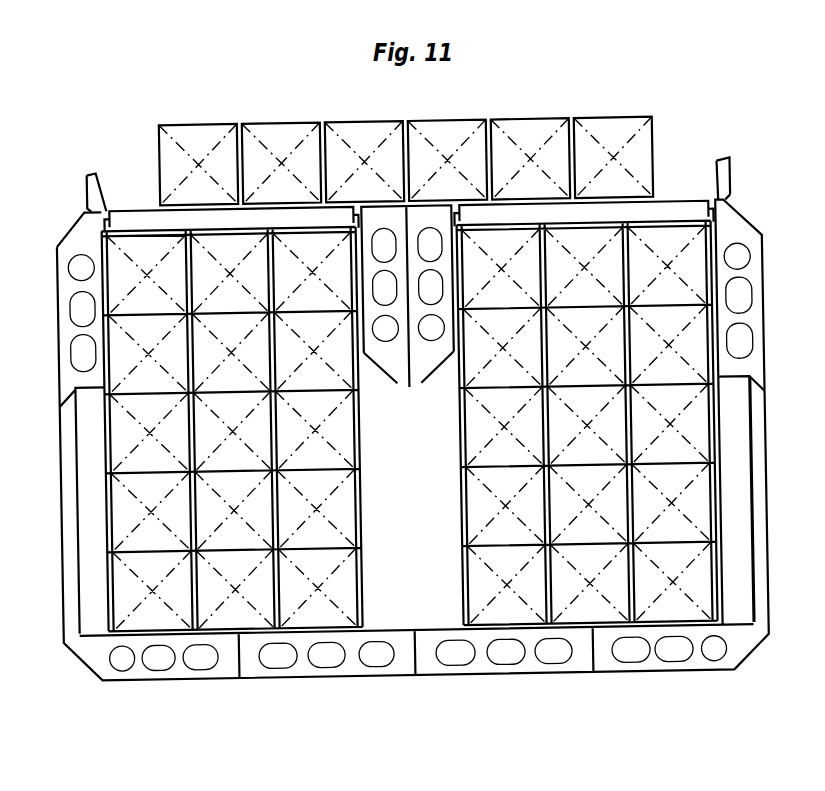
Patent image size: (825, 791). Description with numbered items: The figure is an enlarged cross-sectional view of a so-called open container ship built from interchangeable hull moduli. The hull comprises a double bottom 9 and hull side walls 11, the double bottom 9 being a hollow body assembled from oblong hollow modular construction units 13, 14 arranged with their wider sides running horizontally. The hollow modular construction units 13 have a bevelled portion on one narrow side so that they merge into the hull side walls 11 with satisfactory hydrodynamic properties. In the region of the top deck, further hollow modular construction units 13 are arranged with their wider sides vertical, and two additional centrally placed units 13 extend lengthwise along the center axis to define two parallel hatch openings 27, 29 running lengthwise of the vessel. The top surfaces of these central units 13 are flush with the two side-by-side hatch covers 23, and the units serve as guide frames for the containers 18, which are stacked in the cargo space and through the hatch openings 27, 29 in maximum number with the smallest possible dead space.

The double bottom 9 is at (263, 689).
The hull side walls 11 is at (72, 491).
The hollow modular construction units 13 is at (418, 375).
The hollow modular construction units 14 is at (306, 667).
The containers 18 is at (530, 137).
The hatch covers 23 is at (138, 211).
The hatch opening 27 is at (151, 148).
The hatch opening 29 is at (678, 160).